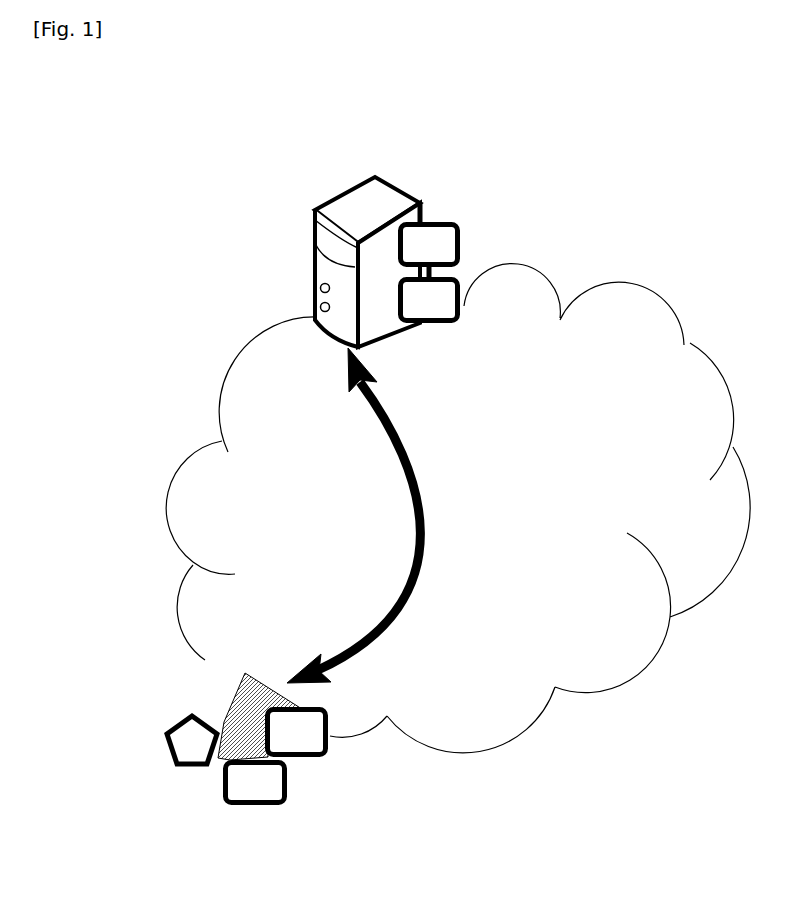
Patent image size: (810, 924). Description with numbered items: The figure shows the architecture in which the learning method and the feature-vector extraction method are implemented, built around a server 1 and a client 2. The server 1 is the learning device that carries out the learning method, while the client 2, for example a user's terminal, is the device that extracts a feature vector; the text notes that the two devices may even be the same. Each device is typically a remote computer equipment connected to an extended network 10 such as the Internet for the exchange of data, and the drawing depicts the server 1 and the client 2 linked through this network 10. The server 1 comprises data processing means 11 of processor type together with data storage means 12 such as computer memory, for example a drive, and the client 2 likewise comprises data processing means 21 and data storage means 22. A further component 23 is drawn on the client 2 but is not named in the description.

The server 1 is at (452, 242).
The extended network 10 is at (233, 343).
The data processing means 11 is at (468, 312).
The data storage means 12 is at (465, 233).
The client 2 is at (254, 782).
The data processing means 21 is at (333, 758).
The data storage means 22 is at (287, 807).
The terminal module 23 is at (170, 760).